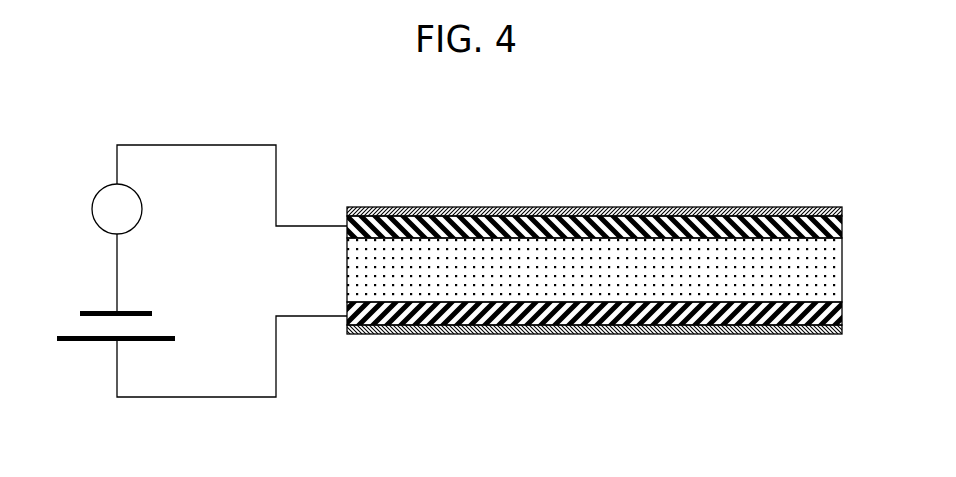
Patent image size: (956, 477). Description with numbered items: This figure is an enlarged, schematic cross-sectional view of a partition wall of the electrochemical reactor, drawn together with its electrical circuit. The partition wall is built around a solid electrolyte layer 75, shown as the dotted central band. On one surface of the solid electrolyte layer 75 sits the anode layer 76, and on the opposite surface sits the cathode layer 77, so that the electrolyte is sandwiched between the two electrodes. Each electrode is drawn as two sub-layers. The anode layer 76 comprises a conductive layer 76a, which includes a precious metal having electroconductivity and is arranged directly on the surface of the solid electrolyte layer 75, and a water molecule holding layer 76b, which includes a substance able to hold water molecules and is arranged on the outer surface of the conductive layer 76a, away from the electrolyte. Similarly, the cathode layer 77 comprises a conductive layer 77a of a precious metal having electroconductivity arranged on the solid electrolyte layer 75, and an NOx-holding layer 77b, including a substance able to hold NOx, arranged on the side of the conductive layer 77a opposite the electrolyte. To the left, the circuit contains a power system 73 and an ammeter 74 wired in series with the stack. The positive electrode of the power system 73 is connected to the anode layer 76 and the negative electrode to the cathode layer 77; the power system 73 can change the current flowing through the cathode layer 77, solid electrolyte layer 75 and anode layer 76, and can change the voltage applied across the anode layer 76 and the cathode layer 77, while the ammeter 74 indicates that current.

The power system 73 is at (98, 343).
The ammeter 74 is at (103, 190).
The solid electrolyte layer 75 is at (843, 272).
The anode layer 76 is at (627, 363).
The conductive layer 76a is at (744, 315).
The water molecule holding layer 76b is at (673, 333).
The cathode layer 77 is at (627, 181).
The conductive layer 77a is at (650, 226).
The NOx-holding layer 77b is at (772, 208).